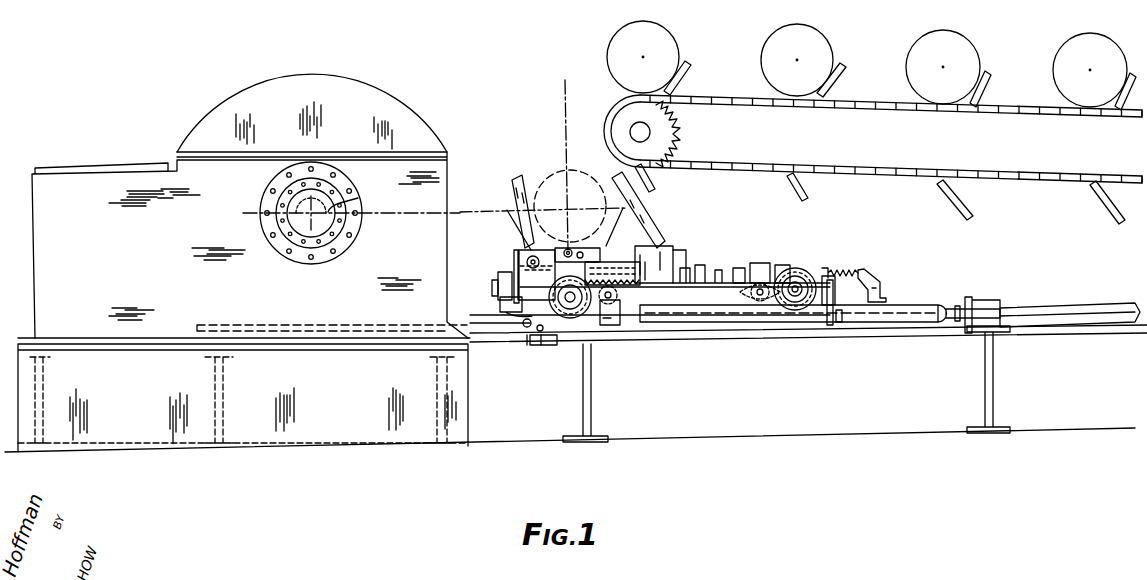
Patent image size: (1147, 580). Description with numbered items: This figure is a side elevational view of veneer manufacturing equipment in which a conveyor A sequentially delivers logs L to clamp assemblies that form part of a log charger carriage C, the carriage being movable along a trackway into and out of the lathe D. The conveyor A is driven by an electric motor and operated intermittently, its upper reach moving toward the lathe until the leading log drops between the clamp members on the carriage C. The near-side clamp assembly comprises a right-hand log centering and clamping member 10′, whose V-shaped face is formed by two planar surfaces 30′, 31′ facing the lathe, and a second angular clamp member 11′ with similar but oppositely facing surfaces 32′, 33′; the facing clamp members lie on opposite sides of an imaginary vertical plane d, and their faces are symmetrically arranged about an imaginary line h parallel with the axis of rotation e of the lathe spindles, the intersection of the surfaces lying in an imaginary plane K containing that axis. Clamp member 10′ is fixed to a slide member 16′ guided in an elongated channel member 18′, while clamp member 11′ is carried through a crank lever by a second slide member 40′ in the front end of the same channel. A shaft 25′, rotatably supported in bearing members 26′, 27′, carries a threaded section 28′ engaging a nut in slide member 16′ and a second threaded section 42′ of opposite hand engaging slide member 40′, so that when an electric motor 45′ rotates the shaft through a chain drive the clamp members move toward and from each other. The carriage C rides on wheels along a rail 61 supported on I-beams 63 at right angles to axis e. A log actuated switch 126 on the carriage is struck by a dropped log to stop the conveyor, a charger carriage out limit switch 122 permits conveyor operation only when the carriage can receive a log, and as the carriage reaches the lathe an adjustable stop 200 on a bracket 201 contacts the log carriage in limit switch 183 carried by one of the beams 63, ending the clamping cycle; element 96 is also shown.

The imaginary plane K is at (405, 216).
The axis of rotation e is at (350, 197).
The lathe D is at (401, 431).
The I-beams 63 is at (993, 380).
The log engaging surface 32′ is at (518, 196).
The planar surface 30′ is at (612, 183).
The imaginary line h is at (568, 198).
The imaginary vertical plane d is at (568, 110).
The clamp member 11′ is at (508, 223).
The log engaging surface 33′ is at (530, 240).
The planar surface 31′ is at (618, 222).
The log actuated switch 126 is at (593, 250).
The log centering and clamping member 10′ is at (645, 240).
The slide member 16′ is at (678, 250).
The second slide member 40′ is at (515, 253).
The second threaded section 42′ is at (517, 265).
The bearing member 27′ is at (505, 277).
The shaft 25′ is at (498, 291).
The channel member 18′ is at (530, 300).
The threaded section 28′ is at (726, 268).
The bearing member 26′ is at (760, 263).
The electric motor 45′ is at (790, 255).
The log charger carriage C is at (790, 318).
The spring 96 is at (828, 270).
The charger carriage out limit switch 122 is at (876, 282).
The adjustable stop 200 is at (852, 322).
The bracket 201 is at (830, 325).
The log carriage in limit switch 183 is at (540, 342).
The rail 61 is at (1110, 326).
The conveyor A is at (1067, 189).
The logs L is at (968, 40).